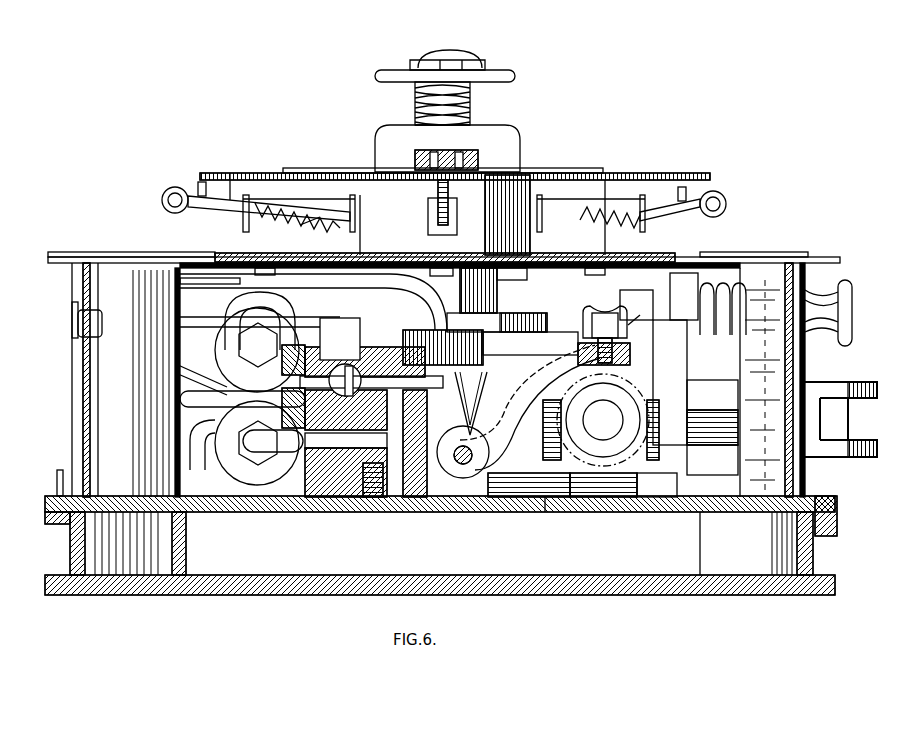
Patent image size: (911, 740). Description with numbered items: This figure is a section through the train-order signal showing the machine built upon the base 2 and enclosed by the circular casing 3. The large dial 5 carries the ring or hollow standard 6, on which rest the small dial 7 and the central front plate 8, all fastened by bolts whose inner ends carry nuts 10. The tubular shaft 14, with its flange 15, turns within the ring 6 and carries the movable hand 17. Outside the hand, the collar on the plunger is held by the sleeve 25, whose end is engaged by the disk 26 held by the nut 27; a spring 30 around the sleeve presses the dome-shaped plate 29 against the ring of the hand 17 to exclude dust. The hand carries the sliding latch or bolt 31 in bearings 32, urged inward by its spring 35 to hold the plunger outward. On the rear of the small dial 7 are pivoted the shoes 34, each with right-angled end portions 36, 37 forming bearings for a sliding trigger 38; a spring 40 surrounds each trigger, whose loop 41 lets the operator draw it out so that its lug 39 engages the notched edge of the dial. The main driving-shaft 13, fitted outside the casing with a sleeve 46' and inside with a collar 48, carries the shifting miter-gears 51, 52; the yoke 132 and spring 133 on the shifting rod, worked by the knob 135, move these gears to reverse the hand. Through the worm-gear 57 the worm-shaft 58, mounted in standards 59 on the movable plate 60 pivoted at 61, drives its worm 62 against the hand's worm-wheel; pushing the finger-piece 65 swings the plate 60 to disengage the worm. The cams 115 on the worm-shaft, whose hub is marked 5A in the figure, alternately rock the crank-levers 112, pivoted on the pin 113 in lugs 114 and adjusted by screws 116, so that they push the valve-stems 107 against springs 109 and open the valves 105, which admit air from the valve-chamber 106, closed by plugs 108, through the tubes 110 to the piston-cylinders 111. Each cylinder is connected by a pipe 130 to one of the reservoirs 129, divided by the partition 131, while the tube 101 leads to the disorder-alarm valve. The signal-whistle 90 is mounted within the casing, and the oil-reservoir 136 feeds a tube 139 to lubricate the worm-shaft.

The nut 27 is at (483, 58).
The disk 26 is at (515, 76).
The sleeve 25 is at (470, 94).
The spring 30 is at (470, 112).
The dome-shaped plate 29 is at (518, 142).
The bearings 32 is at (436, 150).
The sliding latch or bolt 31 is at (462, 150).
The movable hand 17 is at (350, 172).
The central front plate 8 is at (296, 162).
The small dial 7 is at (240, 162).
The end portion of shoe 36 is at (540, 197).
The spring 35 is at (345, 172).
The spring 40 is at (318, 222).
The end portion of shoe 37 is at (249, 226).
The shoe 34 is at (250, 213).
The sliding trigger 38 is at (325, 222).
The lug 39 is at (202, 182).
The loop 41 is at (162, 205).
The ring or hollow standard 6 is at (358, 240).
The top plate A is at (822, 257).
The large dial 5 is at (778, 252).
The spring 133 is at (722, 286).
The oil-reservoir 136 is at (160, 352).
The finger-piece 65 is at (57, 474).
The circular casing 3 is at (805, 365).
The knob 135 is at (852, 315).
The sleeve 46' is at (841, 435).
The base 2 is at (622, 508).
The reservoirs 129 is at (440, 553).
The partition 131 is at (186, 548).
The pipe 130 is at (190, 345).
The nuts 10 is at (395, 282).
The tubes 110 is at (313, 363).
The tube 139 is at (232, 294).
The piston-cylinders 111 is at (257, 396).
The spring 109 is at (272, 394).
The tube 101 is at (241, 417).
The plugs 108 is at (295, 378).
The valve-chamber 106 is at (290, 412).
The valve-stems 107 is at (371, 381).
The valves 105 is at (346, 440).
The bearings or standards 59 is at (503, 381).
The worm-shaft 58 is at (516, 347).
The worm-gear 57 is at (603, 306).
The tubular shaft 14 is at (497, 300).
The flange 15 is at (547, 313).
The signal-whistle 90 is at (648, 283).
The yoke 132 is at (660, 300).
The screw 116 is at (611, 384).
The cams 115 is at (603, 431).
The hub 5A is at (601, 430).
The worm 62 is at (490, 382).
The crank-levers 112 is at (530, 407).
The pin 113 is at (463, 464).
The lugs 114 is at (440, 480).
The miter-gear 52 is at (529, 485).
The miter-gear 51 is at (623, 485).
The movable plate 60 is at (545, 508).
The screw or pivot 61 is at (730, 480).
The main driving-shaft 13 is at (700, 410).
The collar 48 is at (738, 428).